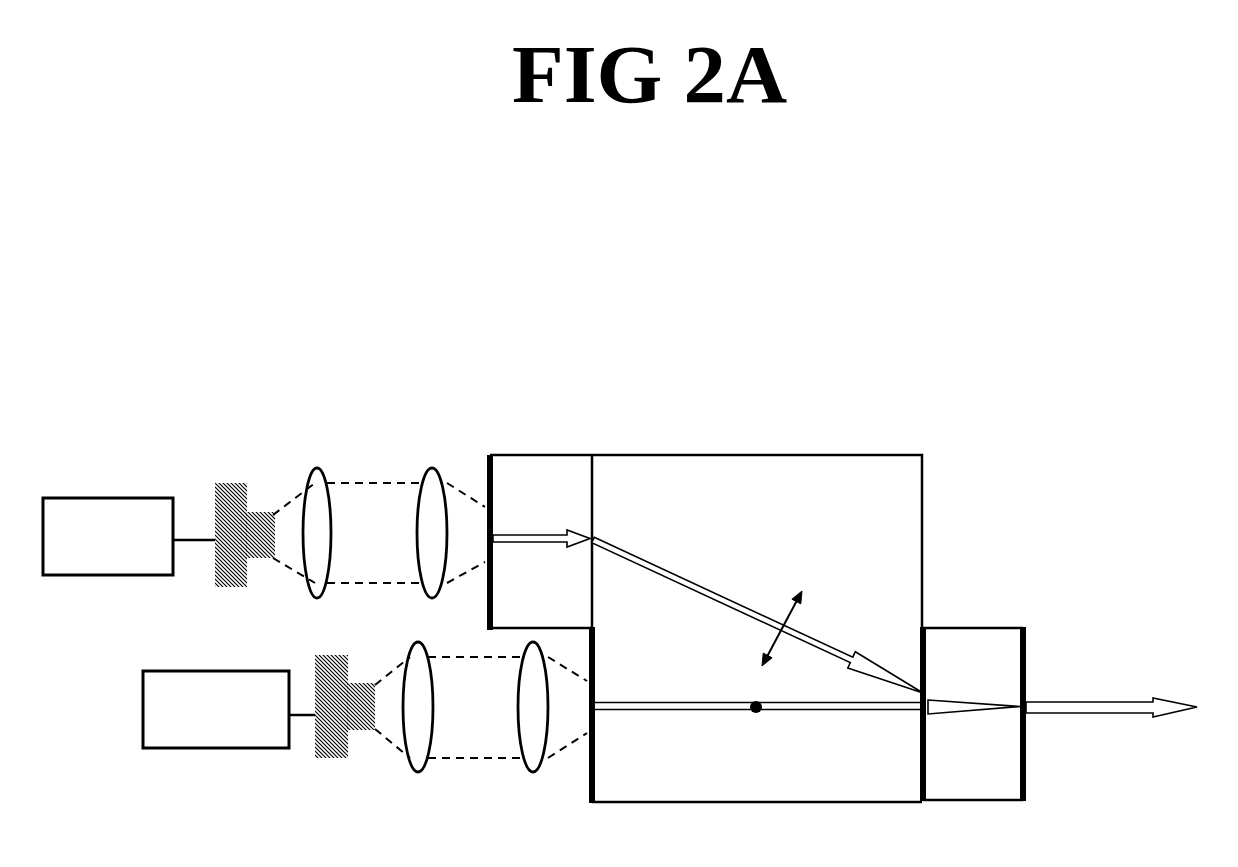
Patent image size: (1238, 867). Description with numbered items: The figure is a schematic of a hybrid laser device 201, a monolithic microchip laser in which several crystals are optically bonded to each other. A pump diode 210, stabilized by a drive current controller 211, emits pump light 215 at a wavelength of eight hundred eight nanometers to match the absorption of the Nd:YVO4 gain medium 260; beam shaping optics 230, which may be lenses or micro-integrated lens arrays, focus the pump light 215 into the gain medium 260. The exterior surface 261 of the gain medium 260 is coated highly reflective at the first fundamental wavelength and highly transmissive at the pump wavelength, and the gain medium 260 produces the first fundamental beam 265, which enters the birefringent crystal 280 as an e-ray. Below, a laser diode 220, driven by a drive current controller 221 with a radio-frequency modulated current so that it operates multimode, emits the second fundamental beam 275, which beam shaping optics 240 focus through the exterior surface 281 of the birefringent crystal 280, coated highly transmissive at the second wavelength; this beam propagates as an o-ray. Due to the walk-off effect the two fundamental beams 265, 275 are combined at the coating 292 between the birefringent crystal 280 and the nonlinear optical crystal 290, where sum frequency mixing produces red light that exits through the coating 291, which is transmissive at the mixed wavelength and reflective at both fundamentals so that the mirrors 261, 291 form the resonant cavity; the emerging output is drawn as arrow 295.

The hybrid laser device 201 is at (981, 357).
The pump diode 210 is at (235, 499).
The drive current controller 211 is at (129, 536).
The pump light 215 is at (379, 533).
The laser diode 220 is at (334, 746).
The drive current controller 221 is at (229, 709).
The beam shaping optics 230 is at (375, 505).
The beam shaping optics 240 is at (481, 732).
The gain medium 260 is at (541, 541).
The exterior surface 261 is at (516, 514).
The first fundamental beam 265 is at (757, 609).
The second fundamental beam 275 is at (806, 652).
The birefringent crystal 280 is at (757, 628).
The exterior surface 281 is at (586, 746).
The nonlinear optical crystal 290 is at (973, 714).
The coating 291 is at (1065, 717).
The coating 292 is at (934, 746).
The output beam 295 is at (1111, 679).